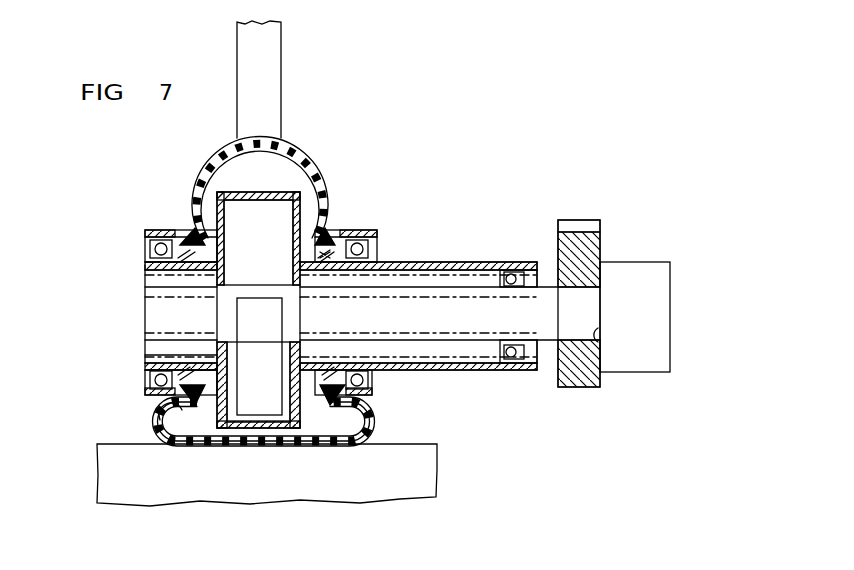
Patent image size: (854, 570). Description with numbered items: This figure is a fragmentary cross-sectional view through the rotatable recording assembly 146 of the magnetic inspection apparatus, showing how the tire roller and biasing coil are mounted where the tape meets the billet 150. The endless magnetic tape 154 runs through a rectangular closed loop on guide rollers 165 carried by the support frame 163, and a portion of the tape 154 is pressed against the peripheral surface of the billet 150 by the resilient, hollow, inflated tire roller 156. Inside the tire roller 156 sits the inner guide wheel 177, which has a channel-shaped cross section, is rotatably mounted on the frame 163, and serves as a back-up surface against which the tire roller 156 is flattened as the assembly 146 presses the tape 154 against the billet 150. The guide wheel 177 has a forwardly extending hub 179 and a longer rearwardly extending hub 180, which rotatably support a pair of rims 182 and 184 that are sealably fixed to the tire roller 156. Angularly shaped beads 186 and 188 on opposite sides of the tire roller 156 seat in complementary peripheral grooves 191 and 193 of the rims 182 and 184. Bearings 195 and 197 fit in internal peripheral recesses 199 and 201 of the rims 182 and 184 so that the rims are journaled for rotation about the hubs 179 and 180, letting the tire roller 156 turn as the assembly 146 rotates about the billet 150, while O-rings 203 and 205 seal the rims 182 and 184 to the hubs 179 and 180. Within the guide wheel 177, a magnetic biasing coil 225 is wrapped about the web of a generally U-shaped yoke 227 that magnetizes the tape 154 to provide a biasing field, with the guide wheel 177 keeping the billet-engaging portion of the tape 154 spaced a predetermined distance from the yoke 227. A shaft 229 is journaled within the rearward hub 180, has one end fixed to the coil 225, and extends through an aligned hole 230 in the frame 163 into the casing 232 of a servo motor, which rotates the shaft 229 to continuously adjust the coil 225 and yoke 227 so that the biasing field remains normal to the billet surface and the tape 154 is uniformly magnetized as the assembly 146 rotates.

The rotatable recording assembly 146 is at (454, 139).
The billet 150 is at (416, 468).
The tape 154 is at (270, 58).
The tire roller 156 is at (320, 154).
The support frame 163 is at (583, 258).
The guide rollers 165 is at (585, 226).
The inner guide wheel 177 is at (273, 192).
The forwardly extending hub 179 is at (169, 356).
The rearwardly extending hub 180 is at (452, 262).
The rim 182 is at (157, 237).
The rim 184 is at (362, 238).
The bead 186 is at (163, 411).
The bead 188 is at (327, 240).
The peripheral groove 191 is at (184, 233).
The peripheral groove 193 is at (352, 400).
The bearing 195 is at (156, 249).
The bearing 197 is at (363, 250).
The internal peripheral recess 199 is at (156, 378).
The internal peripheral recess 201 is at (373, 387).
The O-ring 203 is at (188, 367).
The O-ring 205 is at (325, 251).
The magnetic biasing coil 225 is at (230, 293).
The yoke 227 is at (247, 321).
The shaft 229 is at (548, 322).
The hole 230 is at (603, 333).
The casing 232 is at (656, 284).